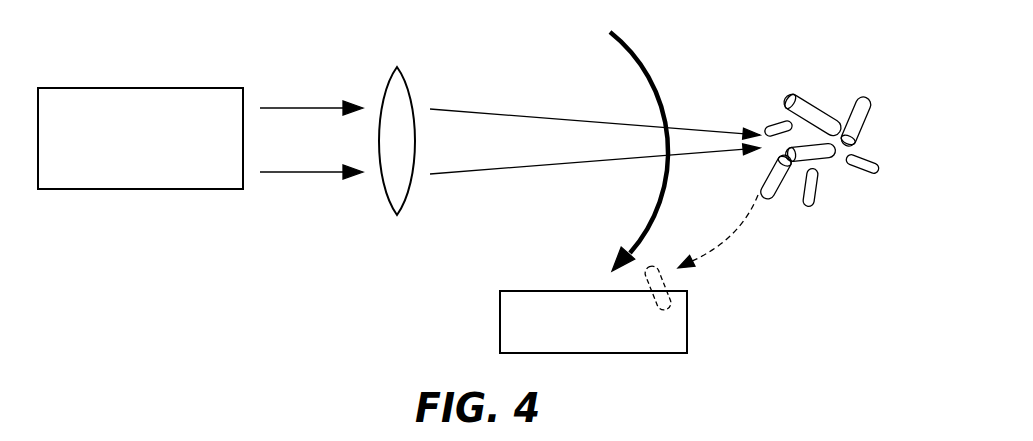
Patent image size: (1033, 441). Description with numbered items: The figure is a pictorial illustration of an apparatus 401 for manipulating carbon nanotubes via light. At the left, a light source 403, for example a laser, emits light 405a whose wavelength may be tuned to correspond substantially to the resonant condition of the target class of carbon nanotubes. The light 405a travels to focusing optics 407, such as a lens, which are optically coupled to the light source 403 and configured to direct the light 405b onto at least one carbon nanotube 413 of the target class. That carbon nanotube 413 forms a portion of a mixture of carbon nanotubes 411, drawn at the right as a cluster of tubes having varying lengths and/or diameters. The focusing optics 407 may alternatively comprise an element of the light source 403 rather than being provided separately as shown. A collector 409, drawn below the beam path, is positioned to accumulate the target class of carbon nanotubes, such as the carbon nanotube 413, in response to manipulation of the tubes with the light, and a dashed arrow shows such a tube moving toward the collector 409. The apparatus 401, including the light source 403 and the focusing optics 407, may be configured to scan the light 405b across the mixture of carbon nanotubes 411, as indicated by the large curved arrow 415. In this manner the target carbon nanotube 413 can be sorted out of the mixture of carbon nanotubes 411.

The apparatus for manipulating carbon nanotubes via light 401 is at (316, 268).
The light source 403 is at (135, 189).
The light 405a is at (325, 108).
The light 405b is at (518, 118).
The focusing optics 407 is at (397, 215).
The collector 409 is at (687, 320).
The mixture of carbon nanotubes 411 is at (816, 197).
The carbon nanotube 413 is at (782, 197).
The arrow 415 is at (640, 63).